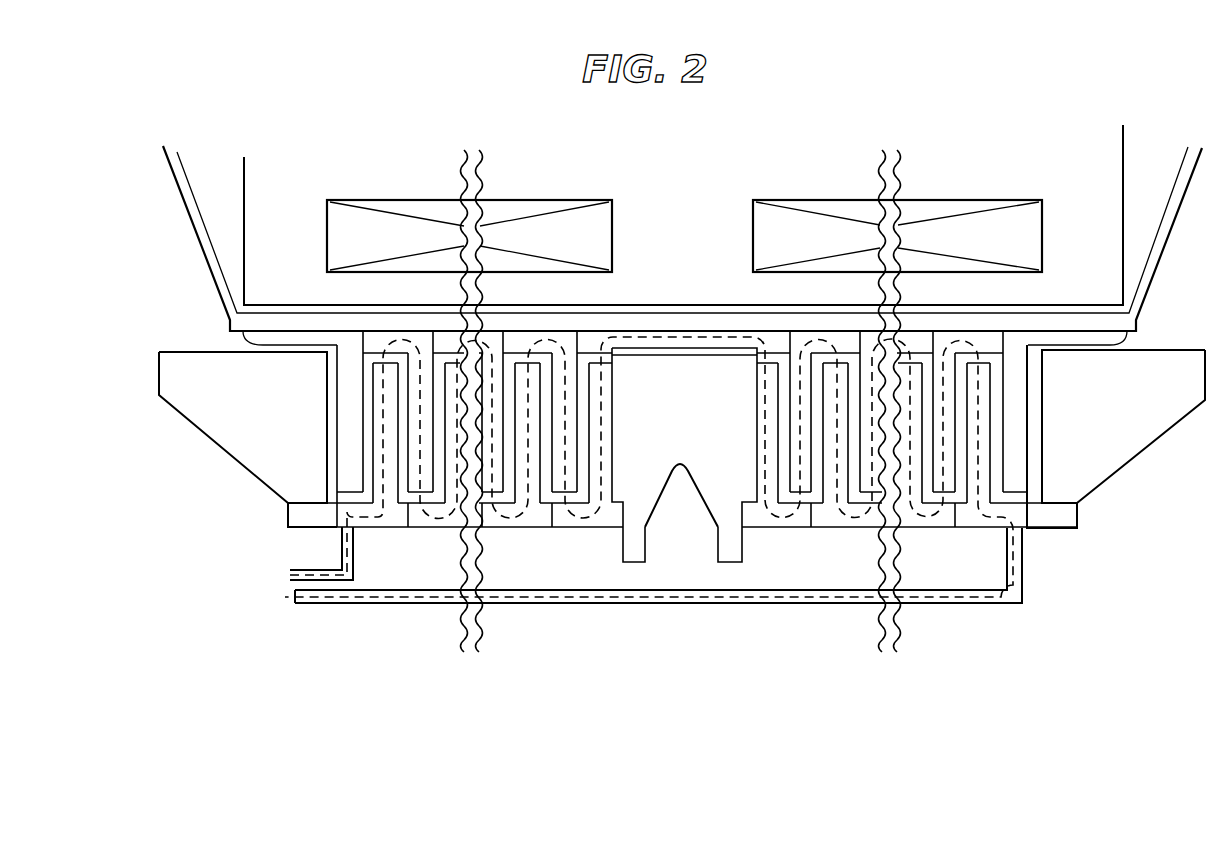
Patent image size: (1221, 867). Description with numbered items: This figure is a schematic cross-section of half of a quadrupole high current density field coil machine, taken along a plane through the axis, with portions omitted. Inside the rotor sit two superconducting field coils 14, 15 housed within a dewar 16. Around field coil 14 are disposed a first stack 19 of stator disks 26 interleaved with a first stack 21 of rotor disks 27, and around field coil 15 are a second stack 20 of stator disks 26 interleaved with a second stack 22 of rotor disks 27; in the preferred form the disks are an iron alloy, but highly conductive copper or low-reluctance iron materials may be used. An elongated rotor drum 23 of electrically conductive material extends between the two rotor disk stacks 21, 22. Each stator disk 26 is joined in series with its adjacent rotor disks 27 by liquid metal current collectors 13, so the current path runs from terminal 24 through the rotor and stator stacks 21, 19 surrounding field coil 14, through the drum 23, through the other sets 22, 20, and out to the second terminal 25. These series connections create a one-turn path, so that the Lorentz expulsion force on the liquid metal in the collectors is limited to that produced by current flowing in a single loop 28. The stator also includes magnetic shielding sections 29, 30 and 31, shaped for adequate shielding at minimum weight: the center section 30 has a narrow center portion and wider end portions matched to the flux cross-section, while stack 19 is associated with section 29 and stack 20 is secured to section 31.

The liquid metal current collectors 13 is at (377, 358).
The field coil 14 is at (565, 200).
The field coil 15 is at (792, 200).
The dewar 16 is at (245, 224).
The first stack of stator disks 19 is at (514, 530).
The second stack of stator disks 20 is at (848, 527).
The first stack of rotor disks 21 is at (568, 343).
The second stack of rotor disks 22 is at (937, 357).
The rotor drum 23 is at (672, 333).
The terminal 24 is at (290, 572).
The second terminal 25 is at (300, 605).
The stator disks 26 is at (530, 423).
The rotor disks 27 is at (430, 365).
The single loop 28 is at (697, 603).
The magnetic shielding section 29 is at (227, 432).
The center magnetic shielding section 30 is at (713, 488).
The magnetic shielding section 31 is at (1110, 463).